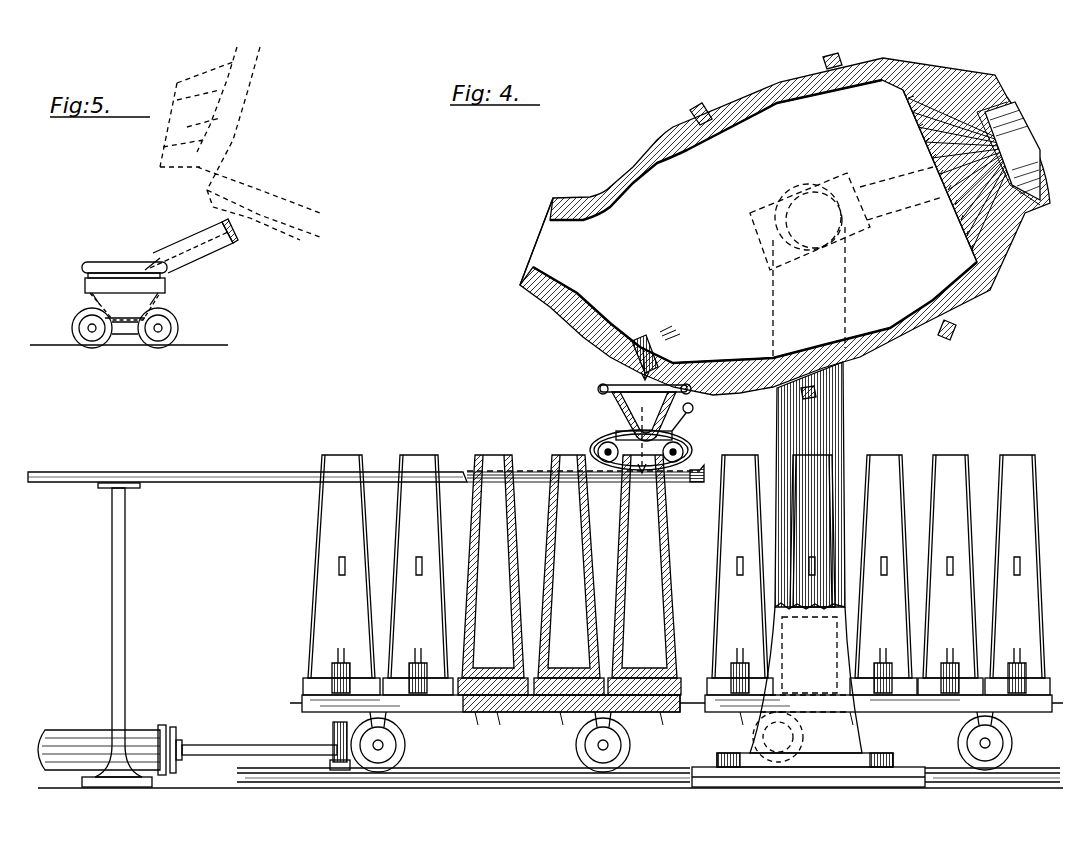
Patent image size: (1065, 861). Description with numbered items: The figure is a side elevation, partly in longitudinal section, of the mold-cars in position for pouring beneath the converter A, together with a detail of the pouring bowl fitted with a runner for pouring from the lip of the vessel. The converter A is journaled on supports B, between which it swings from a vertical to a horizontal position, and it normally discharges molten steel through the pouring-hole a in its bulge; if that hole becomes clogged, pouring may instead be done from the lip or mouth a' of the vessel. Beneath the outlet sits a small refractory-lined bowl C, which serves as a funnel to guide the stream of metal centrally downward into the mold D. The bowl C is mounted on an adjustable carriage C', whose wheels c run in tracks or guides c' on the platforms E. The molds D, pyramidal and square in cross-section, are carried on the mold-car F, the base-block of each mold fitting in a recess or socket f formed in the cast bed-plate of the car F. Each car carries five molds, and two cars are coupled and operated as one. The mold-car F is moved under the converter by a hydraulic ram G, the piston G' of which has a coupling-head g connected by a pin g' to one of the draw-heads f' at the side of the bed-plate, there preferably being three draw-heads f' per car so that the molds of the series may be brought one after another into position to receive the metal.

In FIG. 4, the converter A is at (785, 226).
In FIG. 4, the pouring-hole a is at (640, 399).
In FIG. 4, the lip or mouth of the vessel a' is at (540, 241).
In FIG. 4, the supports B is at (846, 397).
In FIG. 4, the bowl C is at (629, 408).
In FIG. 5, the bowl C is at (124, 262).
In FIG. 4, the carriage C' is at (671, 421).
In FIG. 5, the carriage C' is at (146, 301).
In FIG. 4, the wheels c is at (655, 450).
In FIG. 5, the wheels c is at (129, 328).
In FIG. 4, the tracks or guides c' is at (693, 487).
In FIG. 4, the mold D is at (322, 610).
In FIG. 4, the platforms E is at (231, 472).
In FIG. 4, the mold-car F is at (535, 714).
In FIG. 4, the recess or socket f is at (676, 700).
In FIG. 4, the draw-heads f' is at (694, 742).
In FIG. 4, the hydraulic ram G is at (107, 735).
In FIG. 4, the piston G' is at (256, 740).
In FIG. 4, the coupling-head g is at (315, 794).
In FIG. 4, the pin g' is at (321, 740).